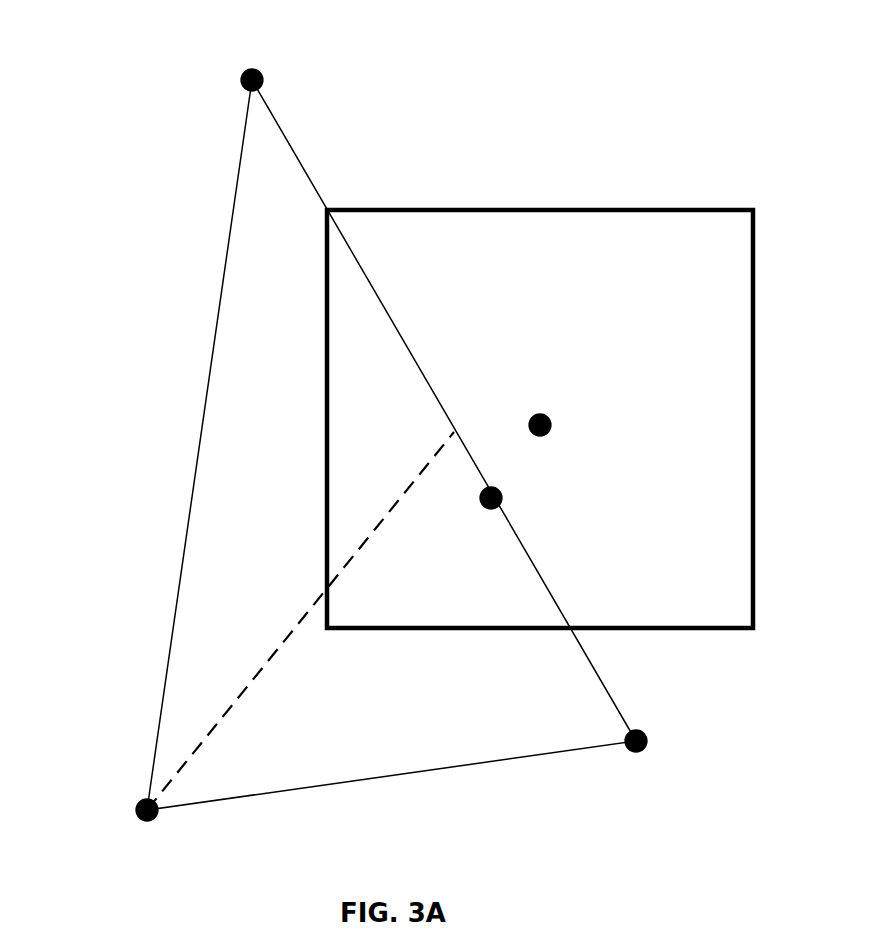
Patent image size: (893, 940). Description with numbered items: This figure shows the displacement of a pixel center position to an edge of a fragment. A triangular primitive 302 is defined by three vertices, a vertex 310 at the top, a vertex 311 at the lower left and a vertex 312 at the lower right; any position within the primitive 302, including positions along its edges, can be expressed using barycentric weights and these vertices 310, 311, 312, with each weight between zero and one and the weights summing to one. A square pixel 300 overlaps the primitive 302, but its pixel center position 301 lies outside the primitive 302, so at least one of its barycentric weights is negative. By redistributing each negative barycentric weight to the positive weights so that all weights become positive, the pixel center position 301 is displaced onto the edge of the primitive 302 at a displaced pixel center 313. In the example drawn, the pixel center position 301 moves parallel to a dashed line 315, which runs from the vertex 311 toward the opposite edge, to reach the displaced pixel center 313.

The pixel 300 is at (630, 207).
The pixel center position 301 is at (548, 414).
The primitive 302 is at (292, 147).
The vertex 310 is at (262, 74).
The vertex 311 is at (140, 800).
The vertex 312 is at (648, 732).
The displaced pixel center 313 is at (502, 492).
The line 315 is at (210, 733).